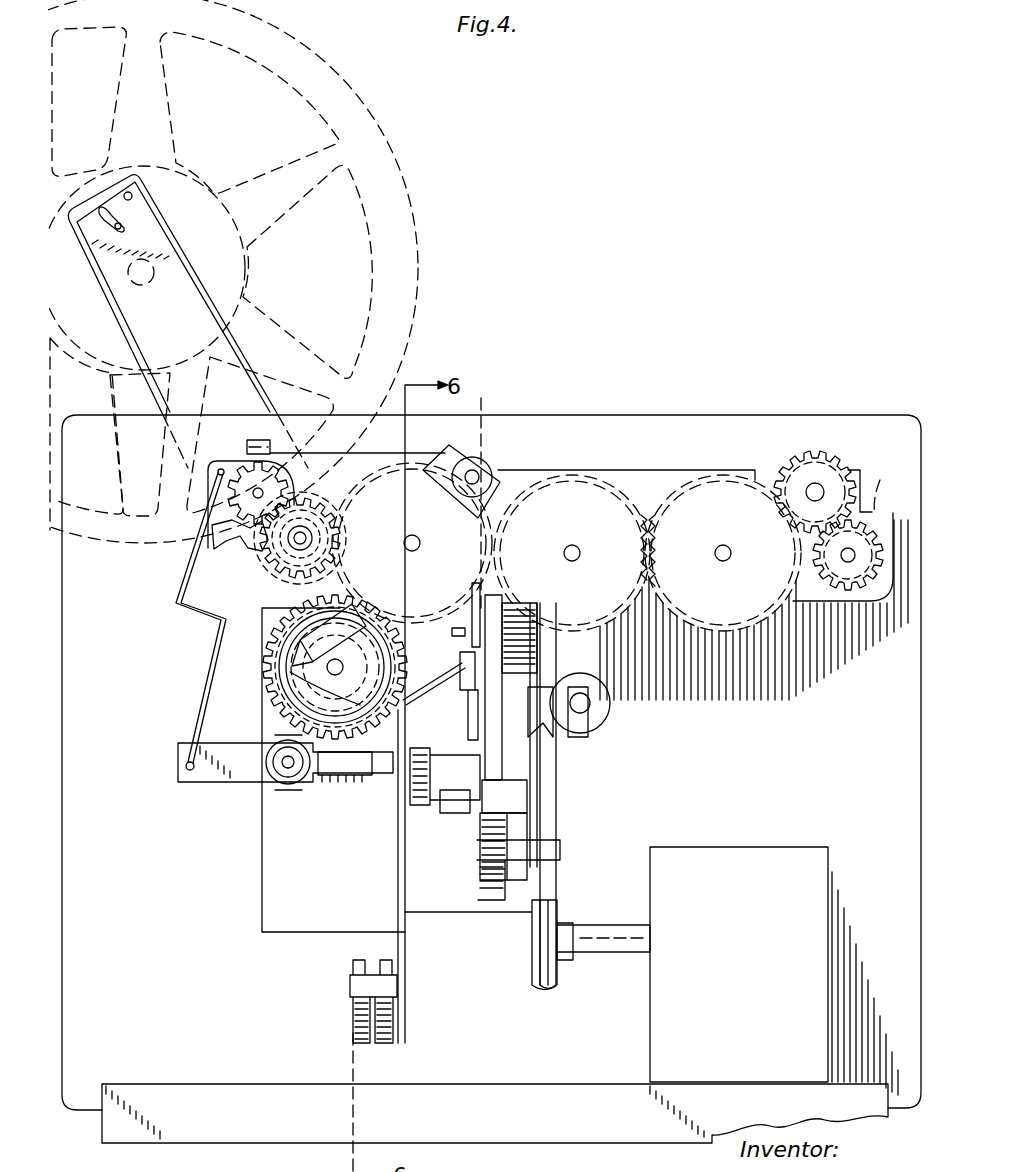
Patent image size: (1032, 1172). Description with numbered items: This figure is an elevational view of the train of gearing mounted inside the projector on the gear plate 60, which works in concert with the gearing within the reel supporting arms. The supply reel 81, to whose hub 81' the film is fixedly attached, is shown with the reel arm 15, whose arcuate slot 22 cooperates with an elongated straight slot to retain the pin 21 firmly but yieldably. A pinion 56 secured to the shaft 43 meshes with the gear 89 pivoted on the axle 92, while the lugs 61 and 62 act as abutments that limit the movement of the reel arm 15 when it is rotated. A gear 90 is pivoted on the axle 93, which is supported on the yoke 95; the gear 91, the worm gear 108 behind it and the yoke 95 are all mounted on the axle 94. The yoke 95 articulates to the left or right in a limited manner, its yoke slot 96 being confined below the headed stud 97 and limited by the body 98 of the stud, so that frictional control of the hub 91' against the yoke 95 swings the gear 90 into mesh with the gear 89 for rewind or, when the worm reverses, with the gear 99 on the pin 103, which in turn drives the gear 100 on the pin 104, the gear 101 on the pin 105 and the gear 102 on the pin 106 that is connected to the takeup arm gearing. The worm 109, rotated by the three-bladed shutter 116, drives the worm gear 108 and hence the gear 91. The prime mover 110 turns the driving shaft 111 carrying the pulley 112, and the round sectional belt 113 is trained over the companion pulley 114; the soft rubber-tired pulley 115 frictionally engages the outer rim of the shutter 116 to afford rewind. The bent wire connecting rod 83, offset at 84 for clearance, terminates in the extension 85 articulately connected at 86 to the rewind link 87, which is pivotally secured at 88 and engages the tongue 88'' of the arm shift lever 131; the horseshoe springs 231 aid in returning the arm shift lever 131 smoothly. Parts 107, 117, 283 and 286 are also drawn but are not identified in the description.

The supply reel 81 is at (209, 271).
The hub of supply reel 81' is at (270, 267).
The reel arm 15 is at (213, 292).
The arcuate slot 22 is at (113, 208).
The pin 21 is at (118, 233).
The pinion 56 is at (250, 462).
The lug 61 is at (240, 440).
The shaft 43 is at (270, 458).
The lug 62 is at (232, 556).
The axle 92 is at (306, 530).
The gear 89 is at (268, 570).
The yoke 95 is at (330, 578).
The gear 90 is at (350, 478).
The axle 93 is at (420, 543).
The gear plate 60 is at (517, 475).
The yoke slot 96 is at (460, 440).
The headed stud 97 is at (480, 462).
The body of stud 98 is at (485, 398).
The pin 103 is at (580, 550).
The pin 104 is at (722, 545).
The gear 99 is at (648, 520).
The gear 100 is at (770, 485).
The gear 101 is at (817, 460).
The pin 105 is at (820, 490).
The gear 102 is at (868, 520).
The pin 106 is at (840, 555).
The spring 107 is at (882, 490).
The connecting rod 83 is at (190, 577).
The offset 84 is at (190, 615).
The extension 85 is at (205, 662).
The articulate connection 86 is at (186, 764).
The rewind link 87 is at (212, 782).
The pivot 88 is at (288, 779).
The tongue 88'' is at (348, 788).
The worm 109 is at (326, 800).
The gear 91 is at (355, 667).
The hub 91' is at (294, 654).
The axle 94 is at (300, 690).
The worm gear 108 is at (292, 714).
The arm shift lever 131 is at (400, 888).
The pulley 115 is at (493, 600).
The companion pulley 114 is at (540, 612).
The pin 117 is at (452, 630).
The three-bladed shutter 116 is at (518, 798).
The belt 113 is at (558, 828).
The roller 283 is at (606, 718).
The bracket 286 is at (585, 738).
The prime mover 110 is at (800, 855).
The driving shaft 111 is at (620, 936).
The pulley 112 is at (527, 985).
The horseshoe springs 231 is at (362, 1043).